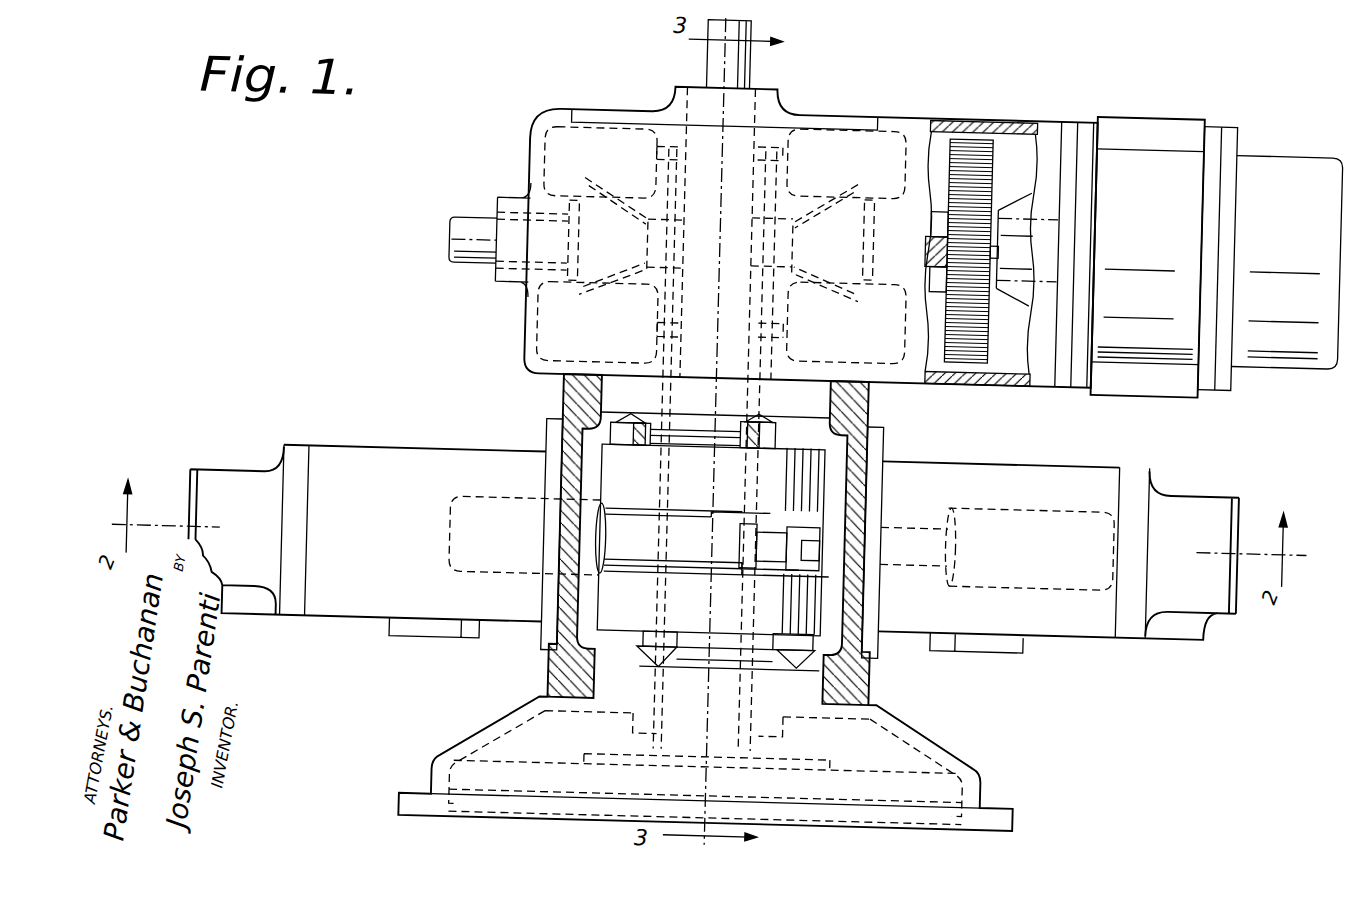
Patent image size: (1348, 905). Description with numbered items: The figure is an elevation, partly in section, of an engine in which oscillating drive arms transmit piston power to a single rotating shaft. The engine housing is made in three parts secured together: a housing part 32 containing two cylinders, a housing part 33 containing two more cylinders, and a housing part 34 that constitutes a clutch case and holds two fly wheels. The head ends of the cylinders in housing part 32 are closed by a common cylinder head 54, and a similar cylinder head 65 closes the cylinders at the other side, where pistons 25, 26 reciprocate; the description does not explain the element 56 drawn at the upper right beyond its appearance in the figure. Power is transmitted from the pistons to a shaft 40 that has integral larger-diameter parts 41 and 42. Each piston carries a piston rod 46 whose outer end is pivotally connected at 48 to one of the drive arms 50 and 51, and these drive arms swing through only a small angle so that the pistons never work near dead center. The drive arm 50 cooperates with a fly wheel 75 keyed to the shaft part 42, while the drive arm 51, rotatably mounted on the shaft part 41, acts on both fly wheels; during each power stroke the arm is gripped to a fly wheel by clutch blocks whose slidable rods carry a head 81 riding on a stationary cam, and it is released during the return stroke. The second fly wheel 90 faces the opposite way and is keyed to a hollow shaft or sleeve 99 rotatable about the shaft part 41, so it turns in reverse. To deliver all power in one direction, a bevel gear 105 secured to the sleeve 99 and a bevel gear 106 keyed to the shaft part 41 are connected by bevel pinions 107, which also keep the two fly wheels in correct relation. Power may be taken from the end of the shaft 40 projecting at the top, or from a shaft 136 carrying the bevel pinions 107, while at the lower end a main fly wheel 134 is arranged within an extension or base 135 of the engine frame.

The piston 25 is at (469, 504).
The piston 26 is at (1091, 503).
The housing part 32 is at (335, 629).
The housing part 33 is at (1080, 625).
The housing part 34 is at (866, 682).
The shaft 40 is at (708, 62).
The shaft part 41 is at (642, 356).
The shaft part 42 is at (669, 595).
The piston rod 46 is at (651, 518).
The pivotal connection 48 is at (744, 542).
The drive arm 50 is at (689, 576).
The drive arm 51 is at (707, 512).
The cylinder head 54 is at (292, 461).
The motor 56 is at (1213, 165).
The cylinder head 65 is at (1146, 467).
The fly wheel 75 is at (854, 603).
The head 81 is at (855, 647).
The fly wheel 90 is at (543, 441).
The hollow shaft or sleeve 99 is at (681, 296).
The bevel gear 105 is at (822, 302).
The bevel gear 106 is at (618, 190).
The bevel pinion 107 is at (625, 263).
The main fly wheel 134 is at (457, 759).
The extension or base 135 is at (923, 740).
The shaft 136 is at (474, 226).